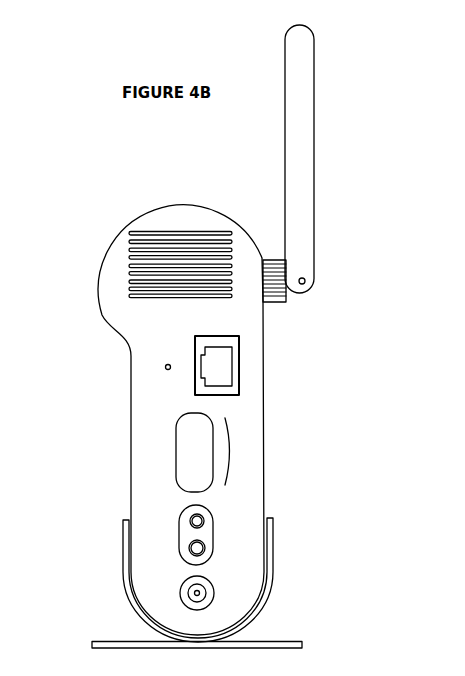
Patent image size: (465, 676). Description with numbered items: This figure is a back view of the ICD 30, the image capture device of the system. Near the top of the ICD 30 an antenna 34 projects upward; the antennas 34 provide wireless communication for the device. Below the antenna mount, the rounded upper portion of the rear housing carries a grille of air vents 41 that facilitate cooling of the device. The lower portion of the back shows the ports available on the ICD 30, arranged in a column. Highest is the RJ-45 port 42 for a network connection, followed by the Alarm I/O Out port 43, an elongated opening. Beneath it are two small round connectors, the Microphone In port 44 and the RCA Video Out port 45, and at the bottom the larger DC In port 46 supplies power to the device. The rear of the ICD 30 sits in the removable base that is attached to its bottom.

The ICD 30 is at (108, 183).
The antennas 34 is at (327, 53).
The air vents 41 is at (125, 258).
The RJ-45 port 42 is at (220, 365).
The Alarm I/O Out port 43 is at (230, 440).
The Microphone In port 44 is at (204, 521).
The RCA Video Out port 45 is at (205, 548).
The DC In port 46 is at (207, 593).